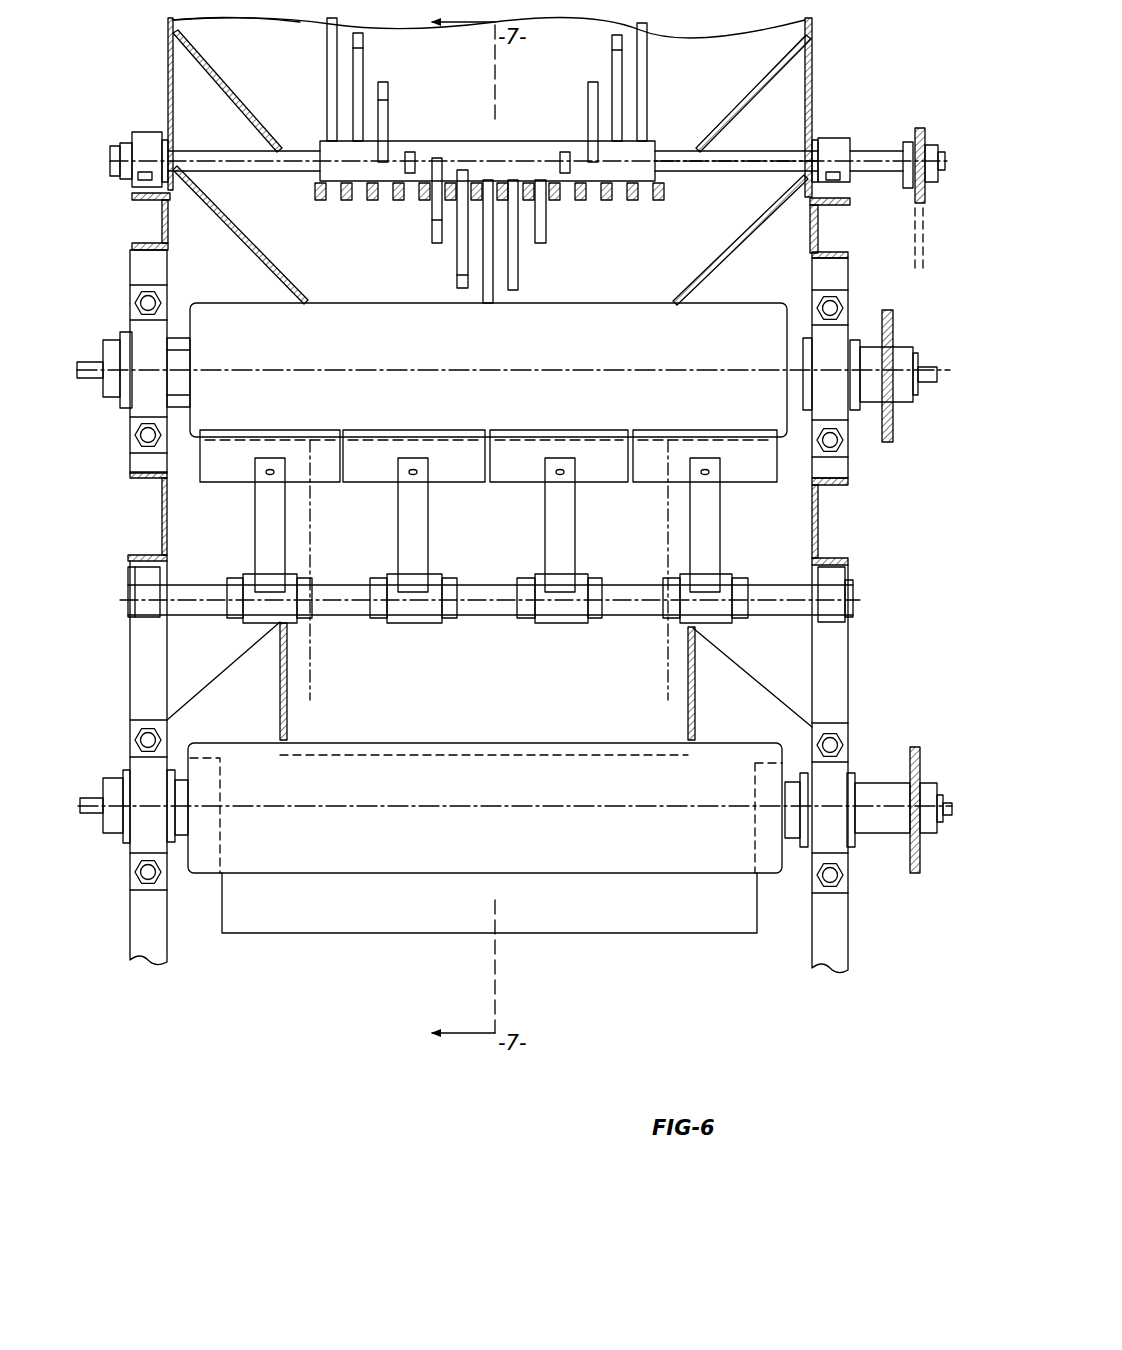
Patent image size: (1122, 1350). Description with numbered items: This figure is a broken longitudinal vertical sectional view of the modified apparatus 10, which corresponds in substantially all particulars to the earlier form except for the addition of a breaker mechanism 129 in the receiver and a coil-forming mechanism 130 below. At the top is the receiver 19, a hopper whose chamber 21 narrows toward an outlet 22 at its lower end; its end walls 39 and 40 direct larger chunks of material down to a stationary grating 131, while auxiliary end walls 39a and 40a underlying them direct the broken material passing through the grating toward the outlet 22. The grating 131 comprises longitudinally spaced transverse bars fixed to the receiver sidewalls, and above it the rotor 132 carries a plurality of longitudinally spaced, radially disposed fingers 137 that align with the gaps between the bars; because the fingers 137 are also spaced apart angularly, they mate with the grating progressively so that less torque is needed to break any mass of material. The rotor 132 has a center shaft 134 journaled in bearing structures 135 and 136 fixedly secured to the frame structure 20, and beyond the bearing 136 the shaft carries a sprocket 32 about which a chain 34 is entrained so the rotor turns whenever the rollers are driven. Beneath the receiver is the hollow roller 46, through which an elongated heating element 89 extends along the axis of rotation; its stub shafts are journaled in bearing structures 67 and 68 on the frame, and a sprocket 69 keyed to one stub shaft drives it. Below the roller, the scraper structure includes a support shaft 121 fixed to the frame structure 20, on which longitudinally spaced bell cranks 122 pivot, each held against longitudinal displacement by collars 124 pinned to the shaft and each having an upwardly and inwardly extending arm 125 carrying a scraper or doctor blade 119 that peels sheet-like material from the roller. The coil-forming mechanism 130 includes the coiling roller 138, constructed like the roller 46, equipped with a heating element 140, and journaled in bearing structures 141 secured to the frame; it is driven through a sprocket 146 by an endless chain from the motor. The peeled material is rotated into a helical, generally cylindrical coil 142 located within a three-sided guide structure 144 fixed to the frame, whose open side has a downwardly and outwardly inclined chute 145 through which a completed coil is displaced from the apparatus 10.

The apparatus 10 is at (160, 84).
The receiver 19 is at (170, 28).
The frame structure 20 is at (126, 667).
The chamber 21 is at (205, 44).
The outlet 22 is at (676, 300).
The sprocket 32 is at (915, 130).
The chain 34 is at (915, 243).
The end wall 39 is at (220, 84).
The auxiliary end wall 39a is at (256, 256).
The end wall 40 is at (762, 102).
The auxiliary end wall 40a is at (728, 262).
The roller 46 is at (410, 345).
The bearing structure 67 is at (158, 360).
The bearing structure 68 is at (808, 360).
The sprocket 69 is at (887, 446).
The heating element 89 is at (86, 378).
The scraper blade 119 is at (372, 476).
The support shaft 121 is at (196, 607).
The bell crank 122 is at (400, 620).
The collar 124 is at (234, 578).
The arm 125 is at (542, 512).
The breaker mechanism 129 is at (565, 78).
The coil-forming mechanism 130 is at (293, 878).
The grating 131 is at (328, 202).
The rotor 132 is at (657, 140).
The center shaft 134 is at (770, 152).
The bearing structure 135 is at (140, 130).
The bearing structure 136 is at (833, 138).
The fingers 137 is at (360, 58).
The roller 138 is at (472, 850).
The heating element 140 is at (92, 798).
The bearing structure 141 is at (142, 845).
The coil 142 is at (512, 768).
The guide structure 144 is at (738, 668).
The chute 145 is at (672, 925).
The sprocket 146 is at (908, 866).